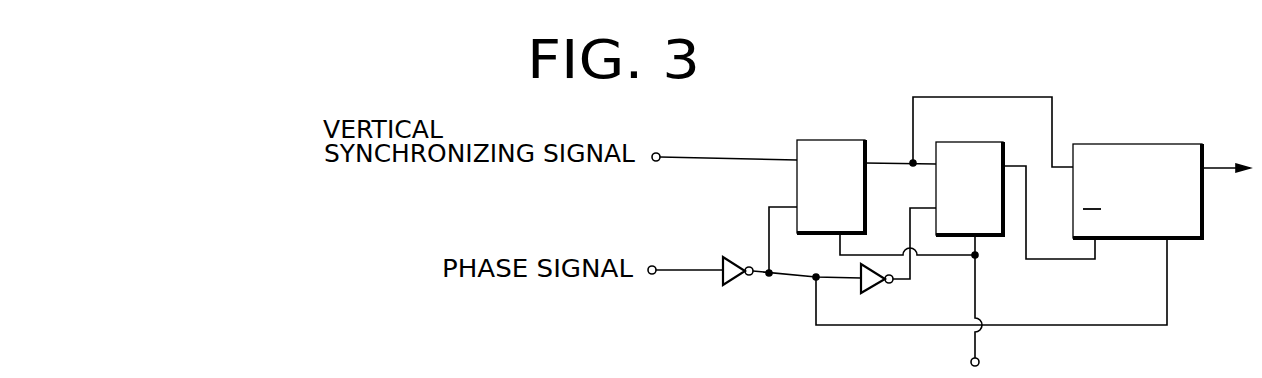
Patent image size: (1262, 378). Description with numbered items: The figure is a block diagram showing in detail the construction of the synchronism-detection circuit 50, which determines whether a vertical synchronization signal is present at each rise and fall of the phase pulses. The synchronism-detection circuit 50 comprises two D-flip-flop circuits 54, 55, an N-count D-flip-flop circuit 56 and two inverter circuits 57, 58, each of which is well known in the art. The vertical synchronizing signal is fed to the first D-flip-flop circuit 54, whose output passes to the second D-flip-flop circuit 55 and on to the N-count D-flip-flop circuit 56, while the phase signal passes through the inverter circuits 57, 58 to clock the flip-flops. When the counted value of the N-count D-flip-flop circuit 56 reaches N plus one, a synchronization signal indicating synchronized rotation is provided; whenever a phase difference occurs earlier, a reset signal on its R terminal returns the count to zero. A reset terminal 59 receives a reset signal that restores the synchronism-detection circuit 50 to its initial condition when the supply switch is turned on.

The synchronism-detection circuit 50 is at (803, 134).
The D-flip-flop circuit 54 is at (836, 139).
The D-flip-flop circuit 55 is at (970, 142).
The N-count D-flip-flop circuit 56 is at (1134, 144).
The inverter circuit 57 is at (733, 287).
The inverter circuit 58 is at (876, 289).
The reset terminal 59 is at (979, 362).